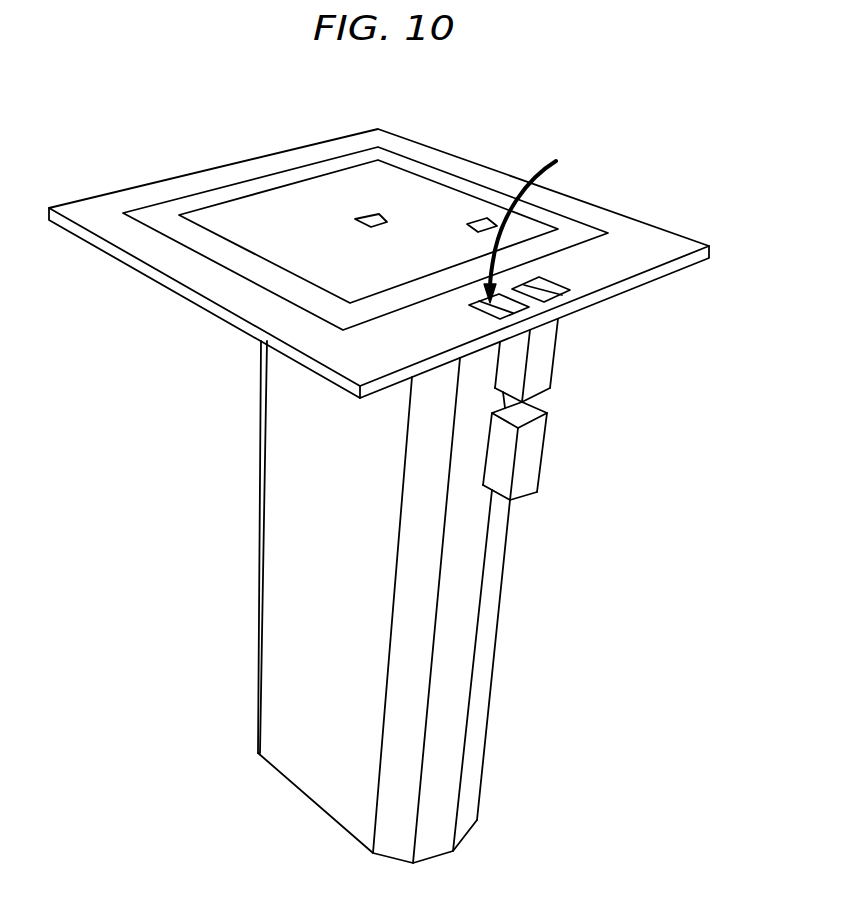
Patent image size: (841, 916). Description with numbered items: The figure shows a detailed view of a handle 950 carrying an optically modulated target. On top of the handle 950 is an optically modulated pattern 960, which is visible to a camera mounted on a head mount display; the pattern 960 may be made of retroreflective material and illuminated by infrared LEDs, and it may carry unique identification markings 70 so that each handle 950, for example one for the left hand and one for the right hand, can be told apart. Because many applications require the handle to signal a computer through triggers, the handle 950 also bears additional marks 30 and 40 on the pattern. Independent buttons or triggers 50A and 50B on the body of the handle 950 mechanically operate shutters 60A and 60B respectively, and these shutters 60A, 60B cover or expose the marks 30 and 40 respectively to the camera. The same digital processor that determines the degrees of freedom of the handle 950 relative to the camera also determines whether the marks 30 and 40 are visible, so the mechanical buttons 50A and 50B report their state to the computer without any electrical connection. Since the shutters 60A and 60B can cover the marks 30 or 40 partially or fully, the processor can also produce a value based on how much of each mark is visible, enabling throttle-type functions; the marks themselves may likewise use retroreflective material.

The optically modulated pattern 960 is at (425, 156).
The handle 950 is at (495, 665).
The unique identification markings 70 is at (368, 216).
The additional mark 30 is at (598, 253).
The additional mark 40 is at (532, 222).
The shutter 60A is at (572, 290).
The shutter 60B is at (529, 306).
The button or trigger 50A is at (540, 360).
The button or trigger 50B is at (530, 447).